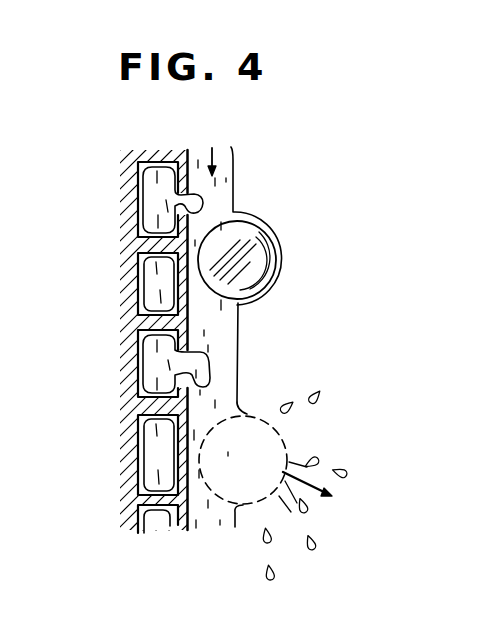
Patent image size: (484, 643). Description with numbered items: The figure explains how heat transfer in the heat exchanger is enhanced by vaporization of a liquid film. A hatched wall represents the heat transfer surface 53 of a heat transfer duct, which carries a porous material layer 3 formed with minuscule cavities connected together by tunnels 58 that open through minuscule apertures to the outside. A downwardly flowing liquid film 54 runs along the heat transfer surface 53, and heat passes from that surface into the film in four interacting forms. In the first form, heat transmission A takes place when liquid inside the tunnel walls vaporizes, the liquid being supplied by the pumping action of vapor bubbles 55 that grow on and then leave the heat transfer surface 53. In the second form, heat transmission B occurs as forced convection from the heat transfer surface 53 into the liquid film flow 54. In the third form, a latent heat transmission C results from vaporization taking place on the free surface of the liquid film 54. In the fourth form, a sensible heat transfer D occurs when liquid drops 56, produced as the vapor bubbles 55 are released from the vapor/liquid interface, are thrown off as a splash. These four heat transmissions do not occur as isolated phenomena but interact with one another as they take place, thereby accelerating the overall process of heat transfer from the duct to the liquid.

The heat transfer surface 53 is at (133, 184).
The heat transmission A is at (138, 352).
The tunnels 58 is at (140, 417).
The porous material layer 3 is at (150, 532).
The liquid film 54 is at (233, 171).
The latent heat transmission C is at (233, 190).
The vapor bubbles 55 is at (252, 258).
The heat transmission B is at (199, 297).
The liquid drops 56 is at (347, 472).
The sensible heat transfer D is at (306, 486).